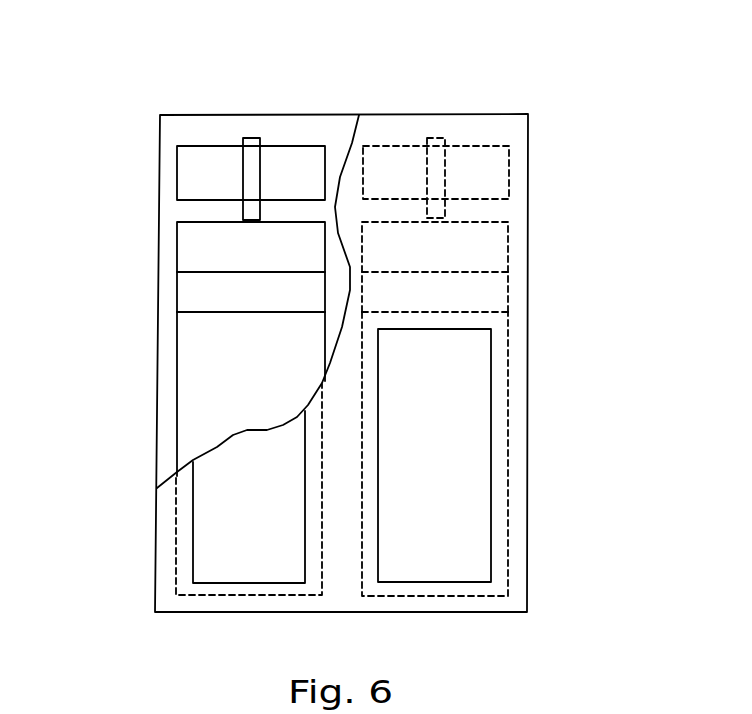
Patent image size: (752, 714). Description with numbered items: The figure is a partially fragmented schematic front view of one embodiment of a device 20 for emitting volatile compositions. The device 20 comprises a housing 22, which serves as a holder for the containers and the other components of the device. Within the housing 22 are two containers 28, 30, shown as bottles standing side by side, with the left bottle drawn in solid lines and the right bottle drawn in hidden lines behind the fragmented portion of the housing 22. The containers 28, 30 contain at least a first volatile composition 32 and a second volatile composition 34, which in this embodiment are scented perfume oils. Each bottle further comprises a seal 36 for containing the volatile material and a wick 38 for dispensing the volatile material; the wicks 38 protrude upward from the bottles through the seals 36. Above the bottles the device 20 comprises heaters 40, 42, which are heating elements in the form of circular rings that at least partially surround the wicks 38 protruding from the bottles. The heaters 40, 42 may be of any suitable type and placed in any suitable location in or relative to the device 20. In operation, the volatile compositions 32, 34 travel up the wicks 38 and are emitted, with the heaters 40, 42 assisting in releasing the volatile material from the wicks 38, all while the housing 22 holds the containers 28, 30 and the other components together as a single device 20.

The device 20 is at (518, 99).
The housing 22 is at (508, 208).
The container 28 is at (175, 392).
The container 30 is at (477, 588).
The first volatile composition 32 is at (180, 528).
The second volatile composition 34 is at (500, 423).
The seal 36 is at (203, 256).
The wick 38 is at (248, 147).
The heater 40 is at (213, 180).
The heater 42 is at (493, 165).